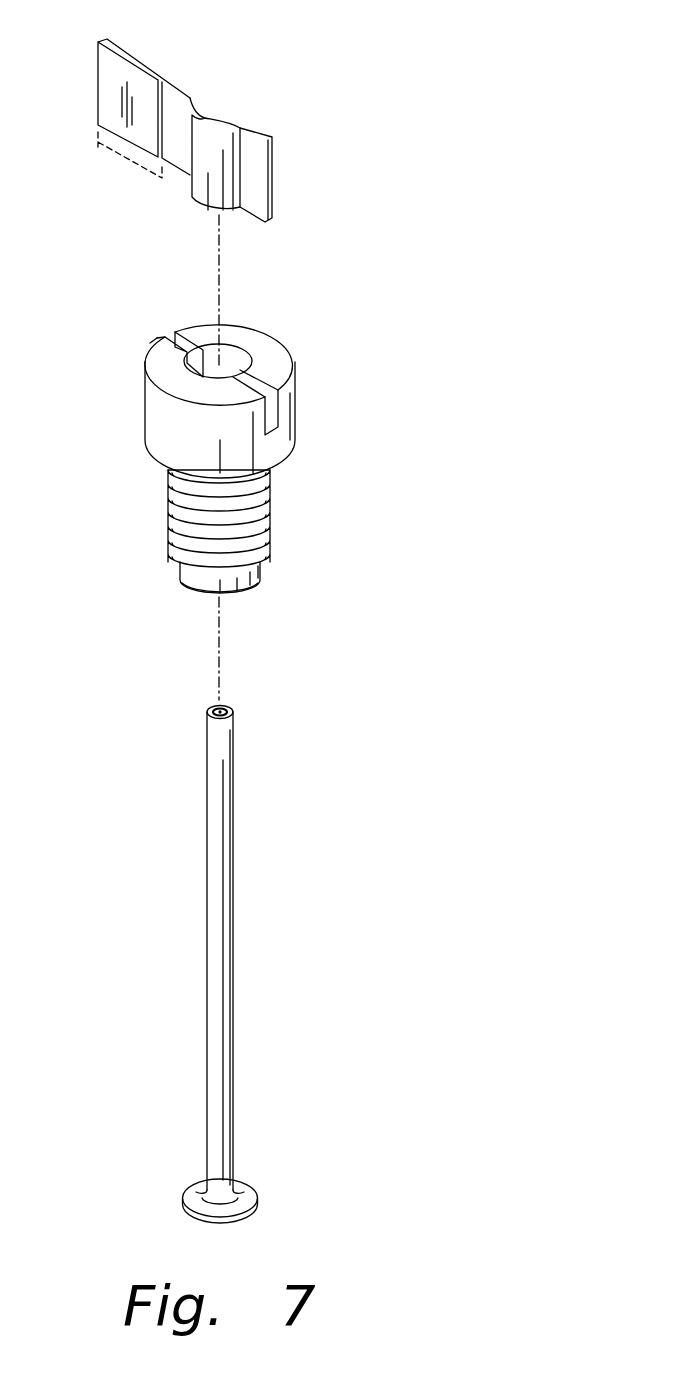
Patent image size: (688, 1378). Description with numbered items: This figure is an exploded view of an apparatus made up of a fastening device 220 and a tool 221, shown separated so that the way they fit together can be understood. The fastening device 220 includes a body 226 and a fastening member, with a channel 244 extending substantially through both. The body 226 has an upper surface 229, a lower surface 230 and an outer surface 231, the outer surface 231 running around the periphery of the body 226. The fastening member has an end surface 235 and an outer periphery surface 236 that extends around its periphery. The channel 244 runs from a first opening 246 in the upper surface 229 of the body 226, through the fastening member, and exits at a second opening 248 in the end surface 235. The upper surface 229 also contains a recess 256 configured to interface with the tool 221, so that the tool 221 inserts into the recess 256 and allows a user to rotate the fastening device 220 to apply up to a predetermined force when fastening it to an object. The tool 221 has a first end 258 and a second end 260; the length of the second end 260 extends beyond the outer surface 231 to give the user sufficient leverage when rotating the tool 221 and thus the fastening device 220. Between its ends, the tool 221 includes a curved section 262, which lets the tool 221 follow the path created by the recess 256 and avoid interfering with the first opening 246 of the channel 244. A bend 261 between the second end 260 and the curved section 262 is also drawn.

The fastening device 220 is at (264, 462).
The tool 221 is at (184, 136).
The body 226 is at (222, 373).
The upper surface 229 is at (267, 342).
The lower surface 230 is at (285, 462).
The outer surface 231 is at (160, 417).
The end surface 235 is at (250, 583).
The outer periphery surface 236 is at (168, 517).
The channel 244 is at (232, 352).
The first opening 246 is at (156, 340).
The second opening 248 is at (232, 595).
The recess 256 is at (273, 405).
The first end 258 is at (267, 133).
The second end 260 is at (128, 52).
The bend 261 is at (162, 97).
The curved section 262 is at (213, 117).